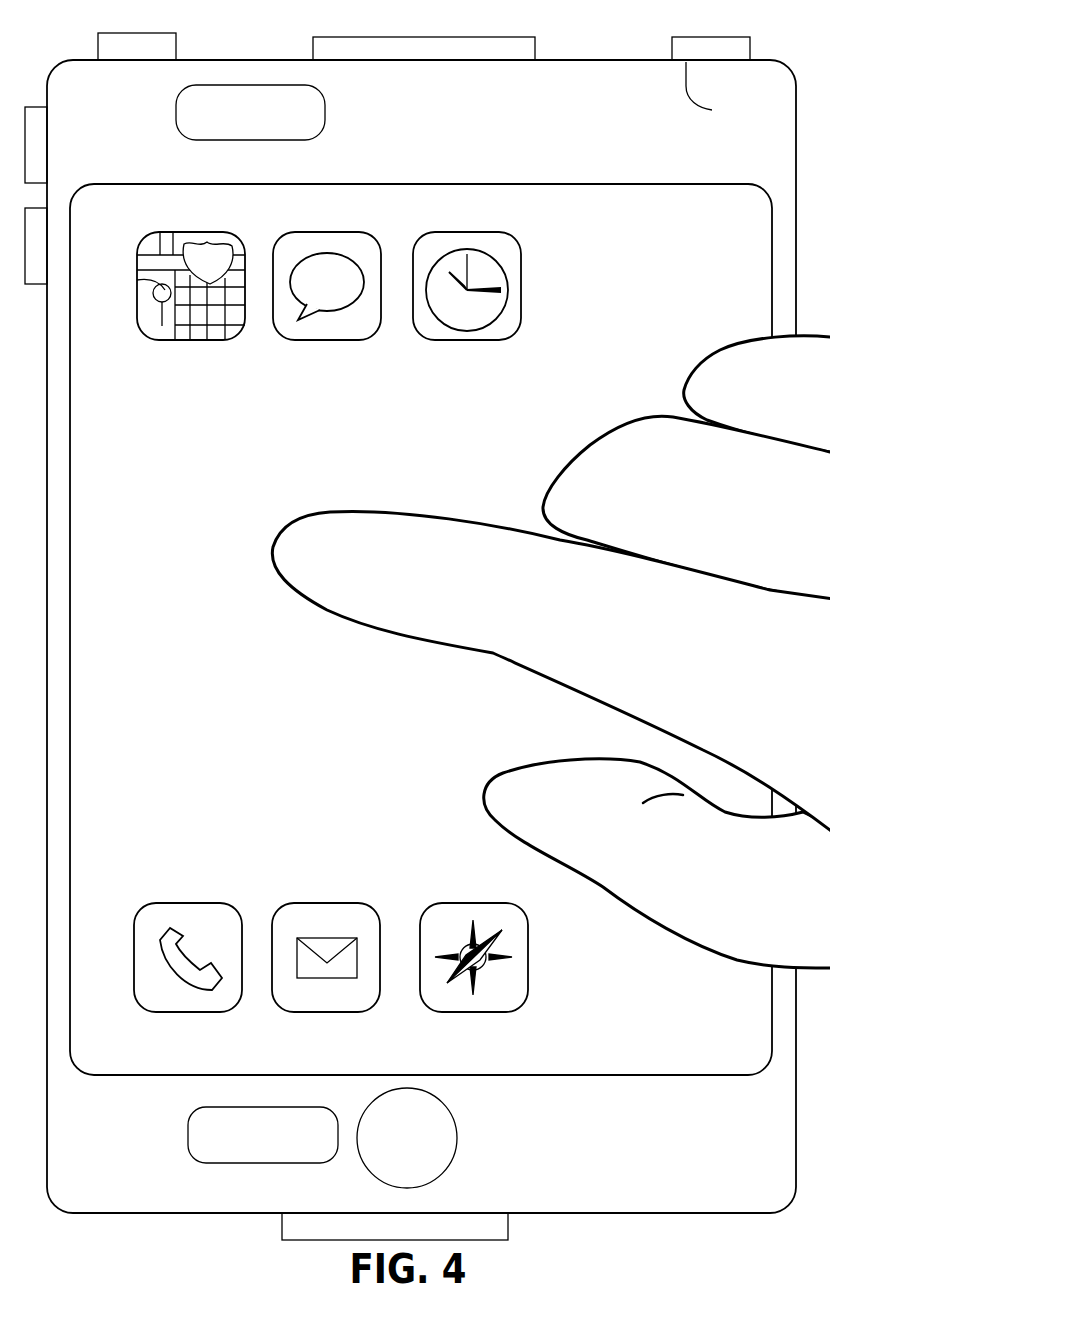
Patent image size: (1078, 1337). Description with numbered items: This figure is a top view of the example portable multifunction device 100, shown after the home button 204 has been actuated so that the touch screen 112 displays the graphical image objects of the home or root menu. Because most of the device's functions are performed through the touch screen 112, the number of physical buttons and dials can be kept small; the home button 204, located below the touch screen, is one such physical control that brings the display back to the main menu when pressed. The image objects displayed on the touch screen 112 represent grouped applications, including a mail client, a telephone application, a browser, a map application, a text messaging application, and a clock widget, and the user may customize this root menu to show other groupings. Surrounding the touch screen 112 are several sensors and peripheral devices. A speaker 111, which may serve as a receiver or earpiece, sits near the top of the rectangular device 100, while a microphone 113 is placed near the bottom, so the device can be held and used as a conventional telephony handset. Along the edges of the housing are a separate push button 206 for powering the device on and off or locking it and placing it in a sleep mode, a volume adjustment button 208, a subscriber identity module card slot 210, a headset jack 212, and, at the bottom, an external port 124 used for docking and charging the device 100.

The device 100 is at (621, 54).
The push button 206 is at (122, 56).
The subscriber identity module (SIM) card slot 210 is at (485, 58).
The headset jack 212 is at (699, 58).
The volume adjustment button 208 is at (44, 130).
The speaker 111 is at (236, 133).
The touch screen 112 is at (204, 846).
The microphone 113 is at (248, 1156).
The home button 204 is at (391, 1156).
The external port 124 is at (469, 1235).